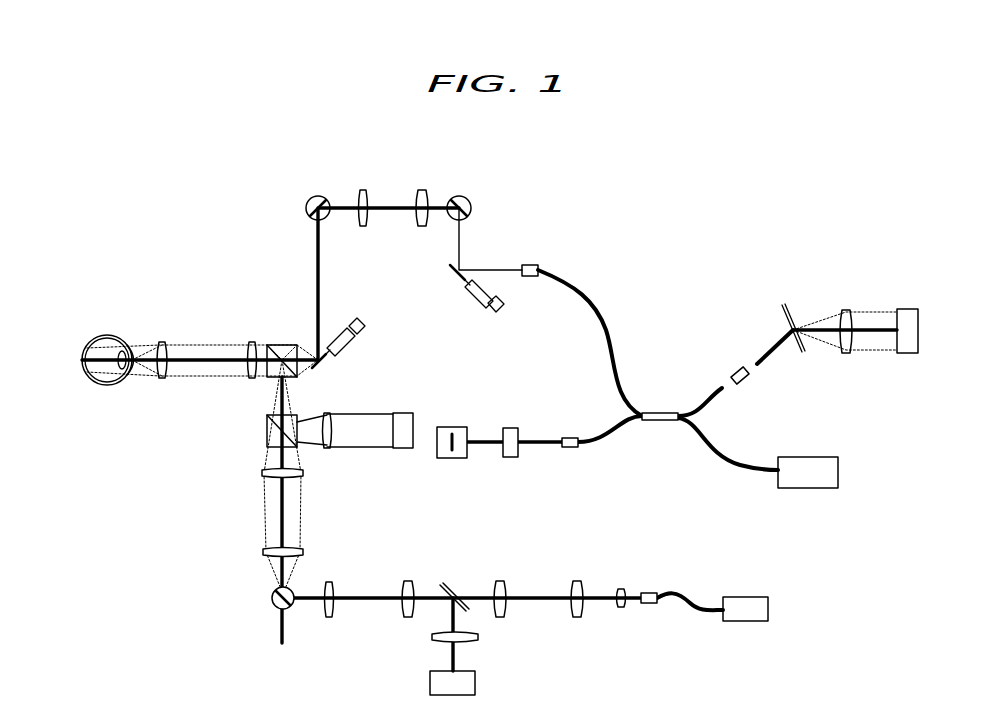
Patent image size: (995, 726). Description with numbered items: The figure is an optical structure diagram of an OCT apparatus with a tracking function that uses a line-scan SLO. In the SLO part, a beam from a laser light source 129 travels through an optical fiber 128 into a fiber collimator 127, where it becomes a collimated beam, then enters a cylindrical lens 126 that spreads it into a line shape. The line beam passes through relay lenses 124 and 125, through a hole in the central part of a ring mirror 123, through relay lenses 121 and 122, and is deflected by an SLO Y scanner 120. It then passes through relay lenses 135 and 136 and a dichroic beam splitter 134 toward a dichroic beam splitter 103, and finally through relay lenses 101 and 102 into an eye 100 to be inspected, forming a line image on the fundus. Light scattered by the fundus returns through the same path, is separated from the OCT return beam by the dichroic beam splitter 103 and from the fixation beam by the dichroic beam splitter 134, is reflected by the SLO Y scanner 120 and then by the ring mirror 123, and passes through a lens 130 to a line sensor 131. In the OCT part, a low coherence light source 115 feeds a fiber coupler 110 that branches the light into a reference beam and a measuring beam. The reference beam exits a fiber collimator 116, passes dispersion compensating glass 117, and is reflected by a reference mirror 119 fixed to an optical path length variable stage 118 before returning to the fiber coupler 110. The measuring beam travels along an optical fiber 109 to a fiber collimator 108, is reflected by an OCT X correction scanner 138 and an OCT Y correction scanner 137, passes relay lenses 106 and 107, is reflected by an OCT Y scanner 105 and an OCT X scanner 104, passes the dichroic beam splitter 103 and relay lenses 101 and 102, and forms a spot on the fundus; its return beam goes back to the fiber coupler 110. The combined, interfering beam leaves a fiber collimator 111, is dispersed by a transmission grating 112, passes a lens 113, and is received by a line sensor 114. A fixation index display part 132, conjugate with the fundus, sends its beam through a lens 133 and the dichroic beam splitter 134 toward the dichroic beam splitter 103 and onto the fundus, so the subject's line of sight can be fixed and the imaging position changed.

The eye to be inspected 100 is at (110, 336).
The relay lens 101 is at (163, 341).
The relay lens 102 is at (250, 341).
The dichroic beam splitter 103 is at (283, 344).
The OCT X scanner 104 is at (340, 344).
The OCT Y scanner 105 is at (313, 196).
The relay lens 106 is at (363, 190).
The relay lens 107 is at (423, 190).
The fiber collimator 108 is at (531, 264).
The optical fiber 109 is at (590, 300).
The fiber coupler 110 is at (658, 412).
The fiber collimator 111 is at (740, 368).
The transmission grating 112 is at (786, 306).
The lens 113 is at (847, 309).
The line sensor 114 is at (908, 309).
The low coherence light source 115 is at (807, 456).
The fiber collimator 116 is at (570, 437).
The dispersion compensating glass 117 is at (511, 427).
The optical path length variable stage 118 is at (451, 426).
The reference mirror 119 is at (453, 450).
The SLO Y scanner 120 is at (272, 600).
The relay lens 121 is at (329, 618).
The relay lens 122 is at (408, 580).
The ring mirror 123 is at (452, 586).
The relay lens 124 is at (504, 582).
The relay lens 125 is at (582, 582).
The cylindrical lens 126 is at (621, 608).
The fiber collimator 127 is at (650, 592).
The optical fiber 128 is at (694, 602).
The laser light source 129 is at (768, 608).
The lens 130 is at (478, 638).
The line sensor 131 is at (476, 683).
The fixation index display part 132 is at (404, 448).
The lens 133 is at (329, 448).
The dichroic beam splitter 134 is at (267, 432).
The relay lens 135 is at (262, 473).
The relay lens 136 is at (263, 552).
The OCT Y correction scanner 137 is at (468, 200).
The OCT X correction scanner 138 is at (476, 306).